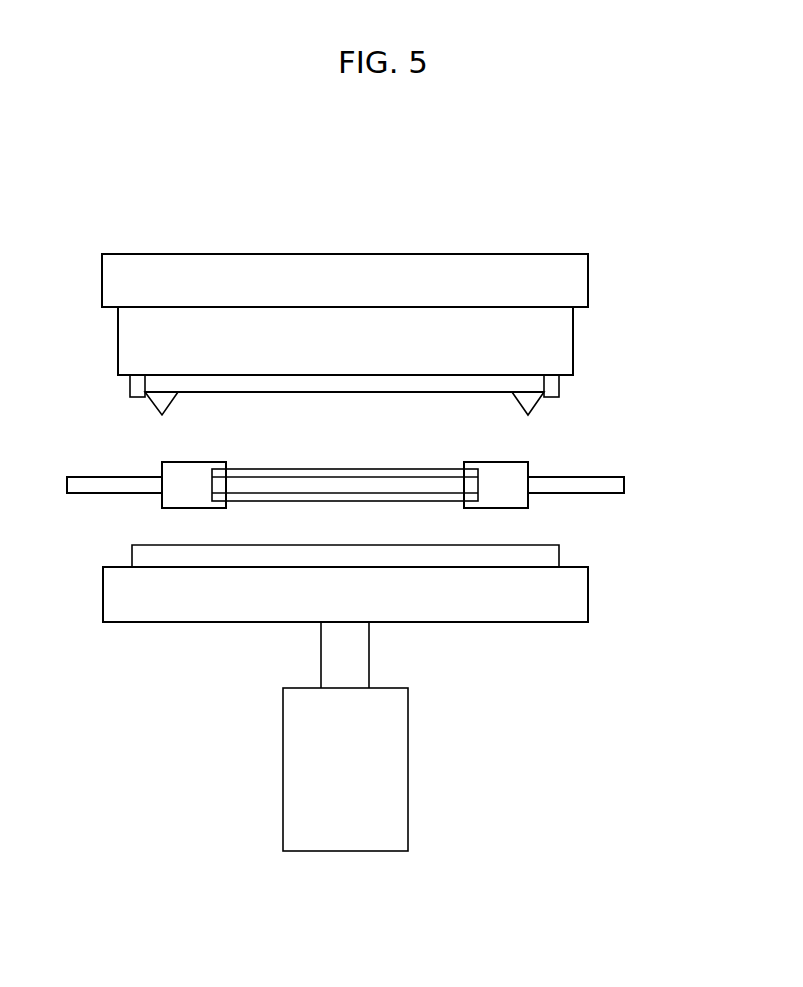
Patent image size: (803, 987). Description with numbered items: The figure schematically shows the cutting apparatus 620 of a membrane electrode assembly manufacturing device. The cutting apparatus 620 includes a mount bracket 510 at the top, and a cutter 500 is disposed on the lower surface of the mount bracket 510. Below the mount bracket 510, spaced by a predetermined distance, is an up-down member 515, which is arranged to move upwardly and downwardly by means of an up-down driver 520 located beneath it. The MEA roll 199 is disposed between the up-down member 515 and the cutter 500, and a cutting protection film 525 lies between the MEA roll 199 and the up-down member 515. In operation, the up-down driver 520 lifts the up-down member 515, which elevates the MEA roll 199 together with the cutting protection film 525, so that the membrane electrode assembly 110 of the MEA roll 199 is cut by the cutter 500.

The cutting apparatus 620 is at (376, 198).
The mount bracket 510 is at (562, 339).
The cutter 500 is at (535, 403).
The MEA roll 199 is at (104, 455).
The membrane electrode assembly 110 is at (269, 445).
The cutting protection film 525 is at (132, 554).
The up-down member 515 is at (504, 610).
The up-down driver 520 is at (283, 769).